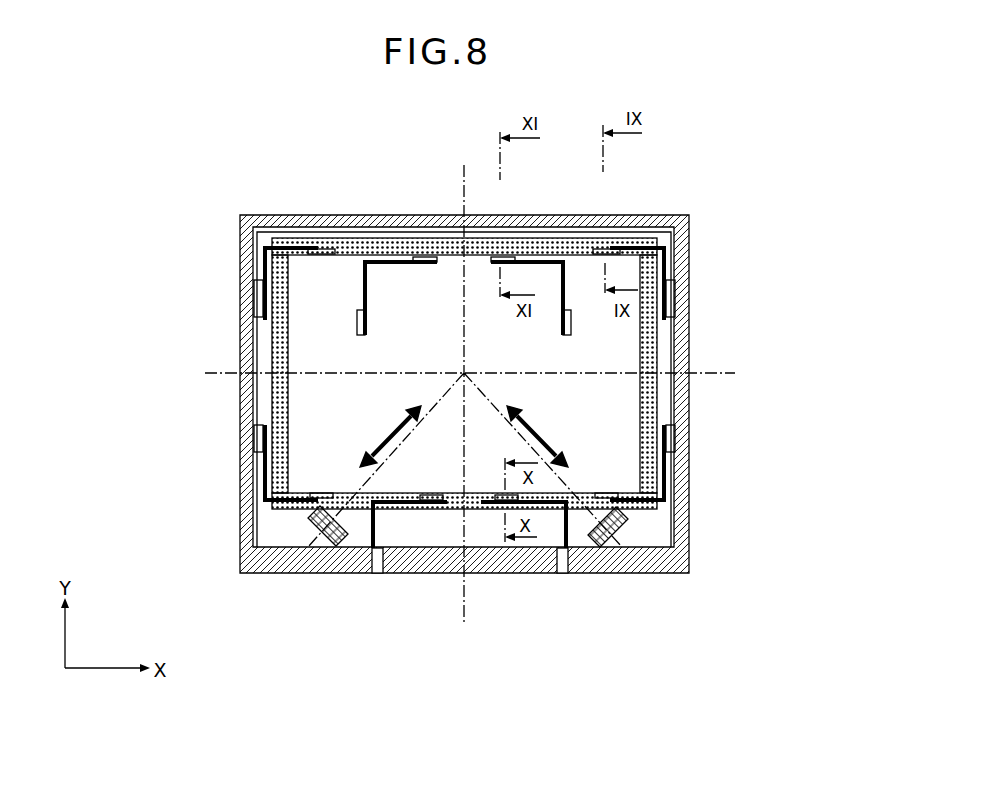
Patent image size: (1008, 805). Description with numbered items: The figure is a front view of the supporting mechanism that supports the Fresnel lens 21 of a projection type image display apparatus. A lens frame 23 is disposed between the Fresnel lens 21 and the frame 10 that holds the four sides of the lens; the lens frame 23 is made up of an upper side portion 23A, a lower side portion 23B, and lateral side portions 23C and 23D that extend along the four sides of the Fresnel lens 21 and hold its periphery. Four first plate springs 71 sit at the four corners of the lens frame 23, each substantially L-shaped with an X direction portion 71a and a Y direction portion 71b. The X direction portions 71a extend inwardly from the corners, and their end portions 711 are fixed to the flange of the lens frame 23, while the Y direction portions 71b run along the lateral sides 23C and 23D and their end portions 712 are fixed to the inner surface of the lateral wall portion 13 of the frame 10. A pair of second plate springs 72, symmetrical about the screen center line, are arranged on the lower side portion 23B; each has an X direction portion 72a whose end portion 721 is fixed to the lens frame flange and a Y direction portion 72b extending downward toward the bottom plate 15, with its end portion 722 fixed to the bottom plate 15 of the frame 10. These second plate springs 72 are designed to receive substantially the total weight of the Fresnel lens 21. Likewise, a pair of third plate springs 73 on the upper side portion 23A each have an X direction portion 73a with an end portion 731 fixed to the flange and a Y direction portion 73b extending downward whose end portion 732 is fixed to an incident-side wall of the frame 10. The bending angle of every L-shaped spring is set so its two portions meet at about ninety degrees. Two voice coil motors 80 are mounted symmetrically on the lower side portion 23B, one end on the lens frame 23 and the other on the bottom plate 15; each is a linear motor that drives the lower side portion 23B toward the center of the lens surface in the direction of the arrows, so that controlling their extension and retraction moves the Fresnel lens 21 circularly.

The frame 10 is at (454, 429).
The lateral wall portion 13 is at (245, 460).
The bottom plate 15 is at (298, 560).
The Fresnel lens 21 is at (588, 277).
The lens frame 23 is at (450, 339).
The upper side portion 23A is at (452, 263).
The lower side portion 23B is at (457, 497).
The lateral side portion 23C is at (274, 393).
The lateral side portion 23D is at (655, 393).
The first plate spring 71 is at (473, 361).
The X direction portion 71a is at (275, 248).
The Y direction portion 71b is at (264, 285).
The end portion 711 is at (320, 255).
The end portion 712 is at (457, 366).
The second plate spring 72 is at (462, 567).
The X direction portion 72a is at (413, 513).
The Y direction portion 72b is at (381, 520).
The end portion 721 is at (428, 496).
The end portion 722 is at (448, 667).
The third plate spring 73 is at (460, 232).
The X direction portion 73a is at (402, 258).
The Y direction portion 73b is at (370, 280).
The end portion 731 is at (425, 263).
The end portion 732 is at (358, 322).
The voice coil motor 80 is at (296, 530).